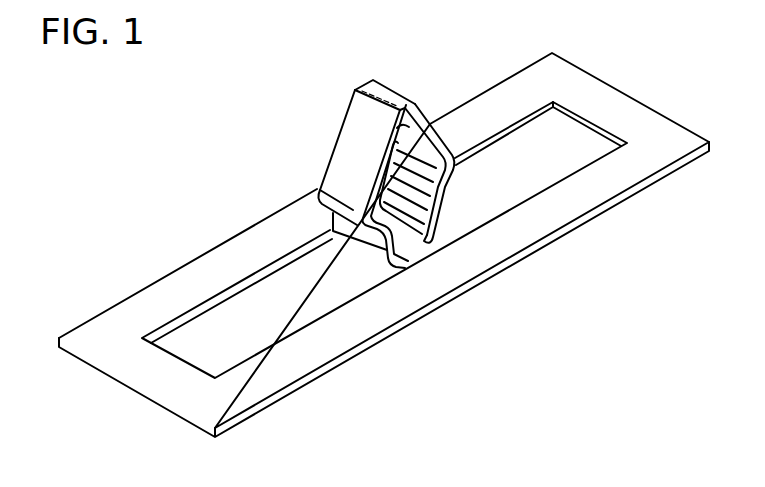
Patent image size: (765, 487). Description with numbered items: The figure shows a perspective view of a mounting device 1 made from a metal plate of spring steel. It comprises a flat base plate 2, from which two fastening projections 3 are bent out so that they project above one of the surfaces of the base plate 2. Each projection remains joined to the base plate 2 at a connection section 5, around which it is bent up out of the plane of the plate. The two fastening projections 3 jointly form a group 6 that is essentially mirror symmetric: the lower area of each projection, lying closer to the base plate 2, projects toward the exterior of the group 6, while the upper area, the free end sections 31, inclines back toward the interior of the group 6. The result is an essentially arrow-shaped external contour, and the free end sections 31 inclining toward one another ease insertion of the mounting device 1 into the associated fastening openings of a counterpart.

The mounting device 1 is at (580, 250).
The base plate 2 is at (205, 259).
The fastening projections 3 is at (345, 180).
The free end sections 31 is at (343, 157).
The connection section 5 is at (408, 238).
The group 6 is at (432, 68).